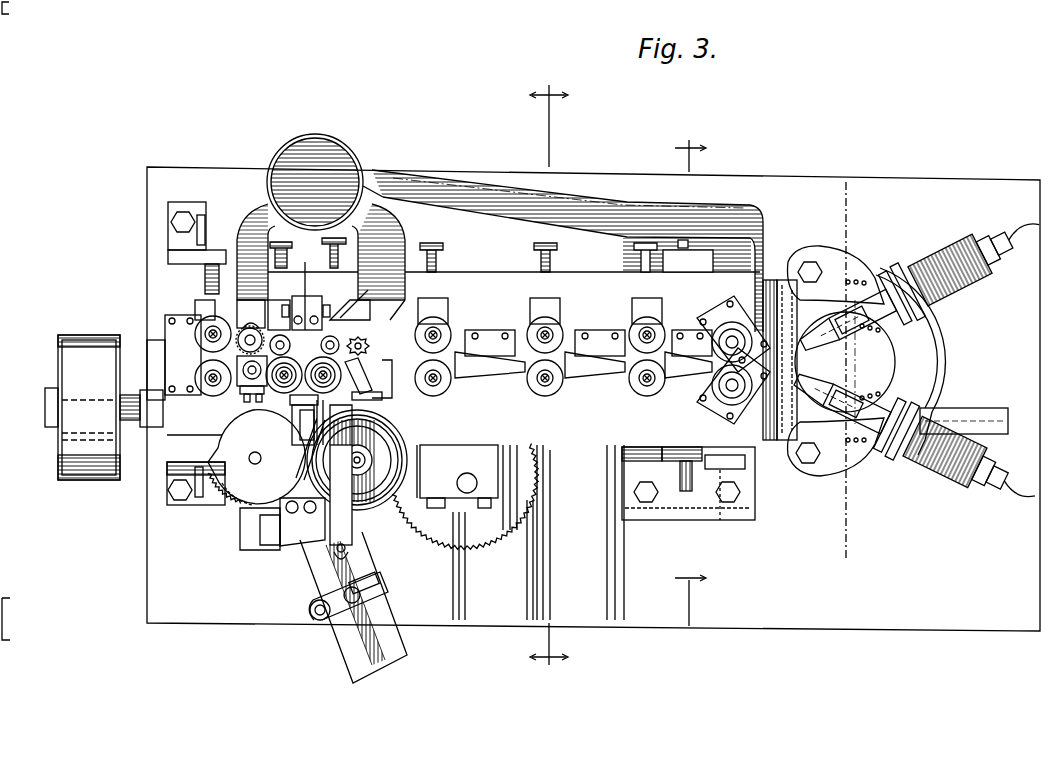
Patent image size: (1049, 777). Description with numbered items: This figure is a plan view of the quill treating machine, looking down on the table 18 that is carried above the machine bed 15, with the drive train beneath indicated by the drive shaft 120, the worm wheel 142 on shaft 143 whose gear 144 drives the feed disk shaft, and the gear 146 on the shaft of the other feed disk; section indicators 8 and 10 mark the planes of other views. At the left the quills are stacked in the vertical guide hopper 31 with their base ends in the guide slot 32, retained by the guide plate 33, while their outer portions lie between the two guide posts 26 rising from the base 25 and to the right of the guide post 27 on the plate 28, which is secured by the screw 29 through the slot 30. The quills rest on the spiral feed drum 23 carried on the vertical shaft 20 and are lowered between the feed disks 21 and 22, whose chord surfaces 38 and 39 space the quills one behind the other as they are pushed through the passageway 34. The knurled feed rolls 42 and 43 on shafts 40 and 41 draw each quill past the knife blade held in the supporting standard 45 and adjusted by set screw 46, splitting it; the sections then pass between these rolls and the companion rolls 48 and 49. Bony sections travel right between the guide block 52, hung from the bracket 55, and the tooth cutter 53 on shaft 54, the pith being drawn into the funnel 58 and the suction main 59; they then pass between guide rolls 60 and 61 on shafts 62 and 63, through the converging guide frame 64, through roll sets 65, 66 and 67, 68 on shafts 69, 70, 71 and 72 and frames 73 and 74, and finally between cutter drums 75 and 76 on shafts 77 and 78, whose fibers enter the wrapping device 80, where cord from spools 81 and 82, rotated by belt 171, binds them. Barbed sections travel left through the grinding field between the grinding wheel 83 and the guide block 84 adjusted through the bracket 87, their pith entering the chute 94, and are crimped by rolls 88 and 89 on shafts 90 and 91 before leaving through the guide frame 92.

The section line 8 is at (549, 381).
The section line 10 is at (690, 374).
The machine bed 15 is at (960, 181).
The table 18 is at (760, 250).
The vertical shaft 20 is at (400, 432).
The feed disk 21 is at (222, 433).
The feed disk 22 is at (352, 515).
The feed drum 23 is at (392, 424).
The base 25 is at (395, 612).
The guide posts 26 is at (282, 524).
The guide post 27 is at (316, 620).
The plate 28 is at (362, 580).
The screw 29 is at (382, 598).
The slot 30 is at (380, 580).
The guide hopper 31 is at (290, 402).
The guide slot 32 is at (300, 430).
The guide plate 33 is at (300, 445).
The passageway 34 is at (292, 418).
The chord surface 38 is at (222, 470).
The chord surface 39 is at (362, 452).
The vertical shaft 40 is at (287, 391).
The vertical shaft 41 is at (323, 372).
The knurled feed roll 42 is at (284, 372).
The knurled feed roll 43 is at (331, 391).
The supporting standard 45 is at (308, 300).
The set screw 46 is at (333, 305).
The companion roll 48 is at (279, 327).
The companion roll 49 is at (350, 308).
The guide block 52 is at (391, 345).
The tooth cutter 53 is at (366, 342).
The shaft 54 is at (362, 338).
The bracket 55 is at (375, 379).
The funnel 58 is at (405, 235).
The suction main 59 is at (320, 138).
The guide roll 60 is at (448, 334).
The guide roll 61 is at (445, 388).
The shaft 62 is at (433, 330).
The shaft 63 is at (435, 388).
The converging guide frame 64 is at (478, 362).
The guide roll 65 is at (560, 334).
The guide roll 66 is at (553, 390).
The guide roll 67 is at (662, 335).
The guide roll 68 is at (652, 390).
The shaft 69 is at (530, 333).
The shaft 70 is at (535, 388).
The shaft 71 is at (632, 335).
The shaft 72 is at (635, 388).
The convergent guide frame 73 is at (594, 364).
The convergent guide frame 74 is at (680, 364).
The cutter drum 75 is at (758, 288).
The cutter drum 76 is at (740, 400).
The shaft 77 is at (780, 360).
The shaft 78 is at (745, 490).
The wrapping device 80 is at (868, 410).
The spool 81 is at (936, 250).
The spool 82 is at (945, 478).
The grinding wheel 83 is at (250, 327).
The guide block 84 is at (212, 420).
The bracket 87 is at (245, 395).
The crimping roll 88 is at (198, 318).
The crimping roll 89 is at (210, 390).
The vertical shaft 90 is at (222, 300).
The vertical shaft 91 is at (195, 365).
The guide frame 92 is at (178, 331).
The chute 94 is at (247, 260).
The drive shaft 120 is at (128, 440).
The worm wheel 142 is at (520, 530).
The shaft 143 is at (468, 478).
The gear 144 is at (478, 542).
The gear 146 is at (222, 492).
The belt 171 is at (918, 335).